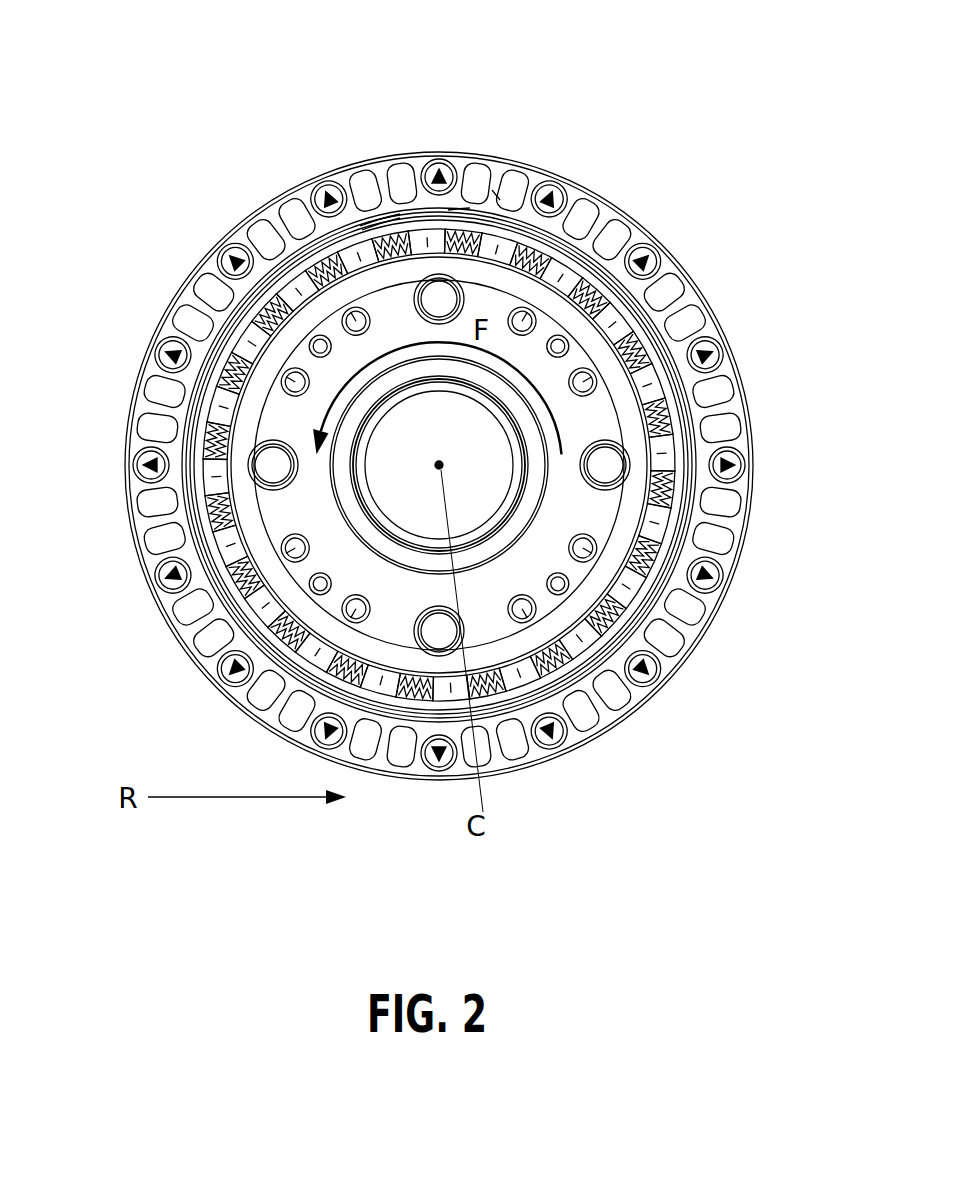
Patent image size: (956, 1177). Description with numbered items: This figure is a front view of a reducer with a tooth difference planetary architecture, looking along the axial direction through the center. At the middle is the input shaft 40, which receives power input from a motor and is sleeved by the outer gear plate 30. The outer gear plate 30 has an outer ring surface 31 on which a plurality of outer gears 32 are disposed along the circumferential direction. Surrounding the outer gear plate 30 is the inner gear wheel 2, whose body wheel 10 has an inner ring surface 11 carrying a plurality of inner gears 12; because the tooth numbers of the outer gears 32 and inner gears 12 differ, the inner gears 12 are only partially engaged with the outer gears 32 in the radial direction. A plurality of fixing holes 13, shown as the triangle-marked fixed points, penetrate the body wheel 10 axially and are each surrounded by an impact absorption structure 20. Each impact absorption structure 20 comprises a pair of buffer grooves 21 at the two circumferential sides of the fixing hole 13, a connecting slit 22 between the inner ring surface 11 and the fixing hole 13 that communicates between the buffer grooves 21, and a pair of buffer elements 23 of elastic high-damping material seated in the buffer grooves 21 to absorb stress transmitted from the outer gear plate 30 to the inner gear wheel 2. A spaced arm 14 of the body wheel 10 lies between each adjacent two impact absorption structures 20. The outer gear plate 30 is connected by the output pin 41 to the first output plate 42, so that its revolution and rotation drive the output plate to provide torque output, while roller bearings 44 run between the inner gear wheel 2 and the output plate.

The inner gear wheel 2 is at (648, 735).
The body wheel 10 is at (640, 240).
The inner ring surface 11 is at (386, 210).
The inner gears 12 is at (395, 226).
The fixing holes 13 is at (430, 168).
The spaced arm 14 is at (380, 214).
The impact absorption structures 20 is at (489, 68).
The buffer grooves 21 is at (472, 176).
The connecting slit 22 is at (455, 200).
The buffer elements 23 is at (492, 190).
The outer gear plate 30 is at (130, 205).
The outer ring surface 31 is at (367, 249).
The outer gears 32 is at (400, 237).
The input shaft 40 is at (490, 493).
The output pin 41 is at (273, 458).
The first output plate 42 is at (272, 500).
The roller bearings 44 is at (223, 408).